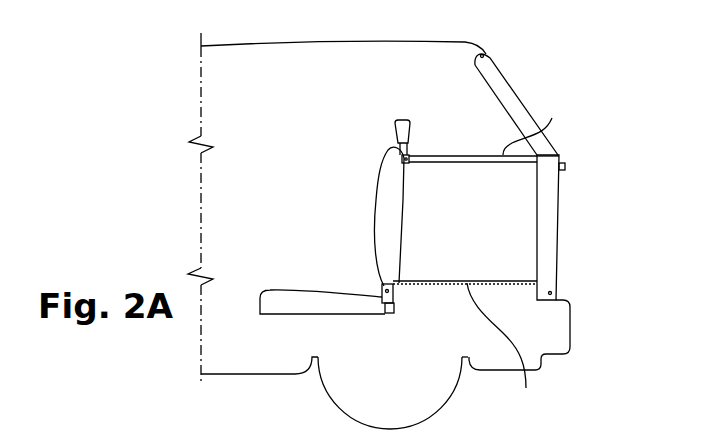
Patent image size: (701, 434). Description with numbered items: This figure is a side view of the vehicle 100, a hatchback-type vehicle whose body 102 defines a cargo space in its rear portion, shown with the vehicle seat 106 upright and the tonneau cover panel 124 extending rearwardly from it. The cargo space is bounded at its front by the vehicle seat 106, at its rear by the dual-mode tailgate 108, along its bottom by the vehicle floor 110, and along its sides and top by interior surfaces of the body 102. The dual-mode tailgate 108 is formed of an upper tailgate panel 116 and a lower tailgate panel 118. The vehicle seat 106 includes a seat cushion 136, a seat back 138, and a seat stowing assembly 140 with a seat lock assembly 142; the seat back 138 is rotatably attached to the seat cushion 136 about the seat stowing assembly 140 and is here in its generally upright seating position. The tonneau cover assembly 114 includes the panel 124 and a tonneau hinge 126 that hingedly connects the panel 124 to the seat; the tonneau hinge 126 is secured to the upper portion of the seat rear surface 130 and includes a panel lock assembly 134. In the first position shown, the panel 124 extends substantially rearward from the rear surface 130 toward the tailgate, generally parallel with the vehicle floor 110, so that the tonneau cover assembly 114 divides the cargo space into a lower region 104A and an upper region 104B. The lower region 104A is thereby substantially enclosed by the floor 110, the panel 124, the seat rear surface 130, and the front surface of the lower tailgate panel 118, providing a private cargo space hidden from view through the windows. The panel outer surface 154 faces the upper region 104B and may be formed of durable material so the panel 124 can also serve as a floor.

The vehicle 100 is at (254, 36).
The vehicle body 102 is at (323, 43).
The lower region 104A is at (517, 235).
The upper region 104B is at (500, 134).
The vehicle seat 106 is at (326, 241).
The dual-mode tailgate 108 is at (578, 227).
The vehicle floor 110 is at (509, 347).
The tonneau cover assembly 114 is at (402, 83).
The upper tailgate panel 116 is at (517, 105).
The lower tailgate panel 118 is at (547, 248).
The tonneau cover panel 124 is at (437, 155).
The tonneau hinge 126 is at (408, 161).
The rear surface 130 is at (398, 254).
The panel lock assembly 134 is at (401, 158).
The seat cushion 136 is at (287, 313).
The seat back 138 is at (375, 247).
The seat stowing assembly 140 is at (388, 313).
The seat lock assembly 142 is at (394, 293).
The panel outer surface 154 is at (544, 127).